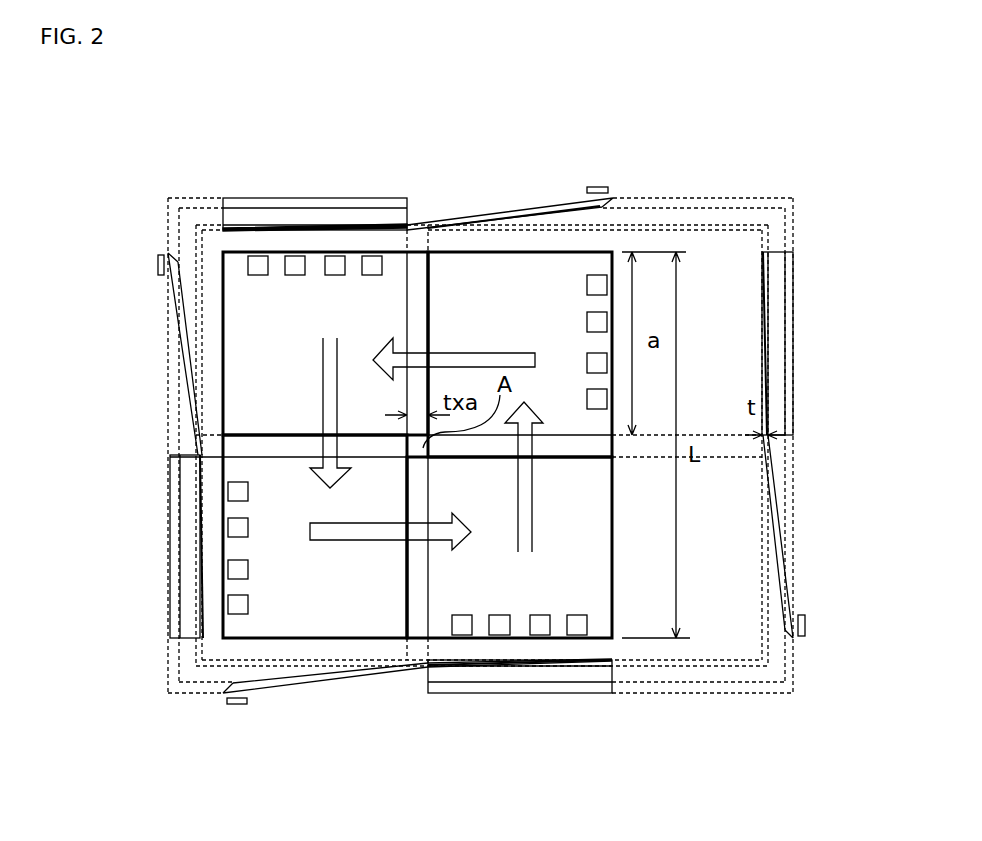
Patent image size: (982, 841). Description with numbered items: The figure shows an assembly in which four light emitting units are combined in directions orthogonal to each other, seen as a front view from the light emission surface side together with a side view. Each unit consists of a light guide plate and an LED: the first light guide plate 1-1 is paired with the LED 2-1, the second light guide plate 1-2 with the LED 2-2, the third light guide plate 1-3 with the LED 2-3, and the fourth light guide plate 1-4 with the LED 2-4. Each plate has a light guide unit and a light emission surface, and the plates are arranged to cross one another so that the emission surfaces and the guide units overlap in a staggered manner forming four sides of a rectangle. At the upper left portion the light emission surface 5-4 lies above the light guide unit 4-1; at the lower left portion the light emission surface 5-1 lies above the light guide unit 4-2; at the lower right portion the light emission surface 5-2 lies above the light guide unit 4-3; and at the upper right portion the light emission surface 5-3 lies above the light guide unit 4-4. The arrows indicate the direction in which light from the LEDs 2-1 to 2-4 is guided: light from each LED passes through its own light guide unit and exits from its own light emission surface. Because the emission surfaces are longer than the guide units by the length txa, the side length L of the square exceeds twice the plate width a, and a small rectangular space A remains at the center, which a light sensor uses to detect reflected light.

The light guide plate 1-1 is at (280, 252).
The light guide plate 1-2 is at (287, 640).
The light guide plate 1-3 is at (470, 640).
The light guide plate 1-4 is at (590, 262).
The LED 2-1 is at (333, 275).
The LED 2-2 is at (248, 528).
The LED 2-3 is at (540, 615).
The LED 2-4 is at (587, 322).
The light guide unit 4-1 is at (337, 205).
The light guide unit 4-2 is at (173, 545).
The light guide unit 4-3 is at (533, 688).
The light guide unit 4-4 is at (513, 213).
The light emission surface 5-1 is at (207, 642).
The light emission surface 5-2 is at (513, 658).
The light emission surface 5-3 is at (600, 252).
The light emission surface 5-4 is at (263, 230).